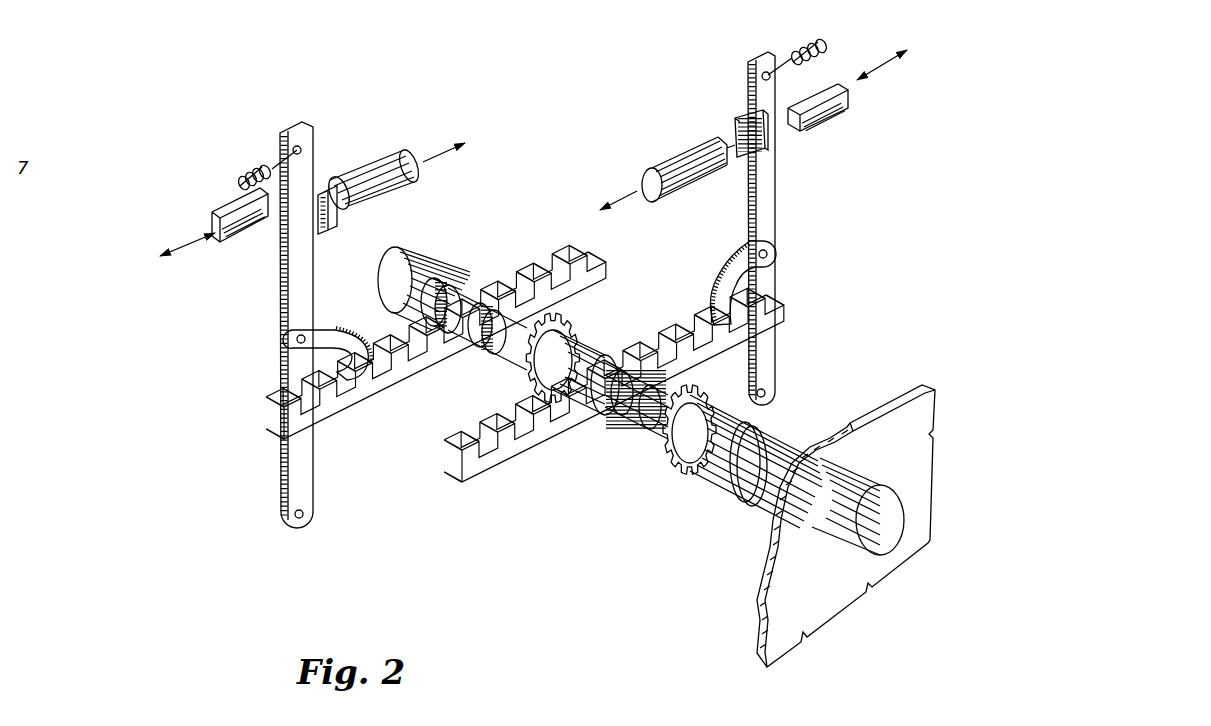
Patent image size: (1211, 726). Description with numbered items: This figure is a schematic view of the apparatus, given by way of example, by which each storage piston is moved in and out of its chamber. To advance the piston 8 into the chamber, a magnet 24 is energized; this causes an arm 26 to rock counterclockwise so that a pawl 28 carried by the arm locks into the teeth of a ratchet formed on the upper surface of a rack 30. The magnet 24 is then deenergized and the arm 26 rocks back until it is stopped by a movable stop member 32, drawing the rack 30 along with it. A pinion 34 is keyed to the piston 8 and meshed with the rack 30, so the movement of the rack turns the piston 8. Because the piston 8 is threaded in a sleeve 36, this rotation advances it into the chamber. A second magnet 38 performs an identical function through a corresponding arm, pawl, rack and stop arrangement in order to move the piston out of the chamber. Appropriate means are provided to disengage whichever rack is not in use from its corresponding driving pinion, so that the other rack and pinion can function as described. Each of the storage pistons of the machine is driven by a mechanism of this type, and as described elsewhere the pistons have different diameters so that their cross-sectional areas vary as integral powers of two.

The piston 8 is at (887, 501).
The magnet 24 is at (678, 157).
The arm 26 is at (748, 92).
The pawl 28 is at (728, 262).
The rack 30 is at (700, 334).
The movable stop member 32 is at (817, 125).
The pinion 34 is at (634, 446).
The sleeve 36 is at (753, 517).
The magnet 38 is at (372, 164).